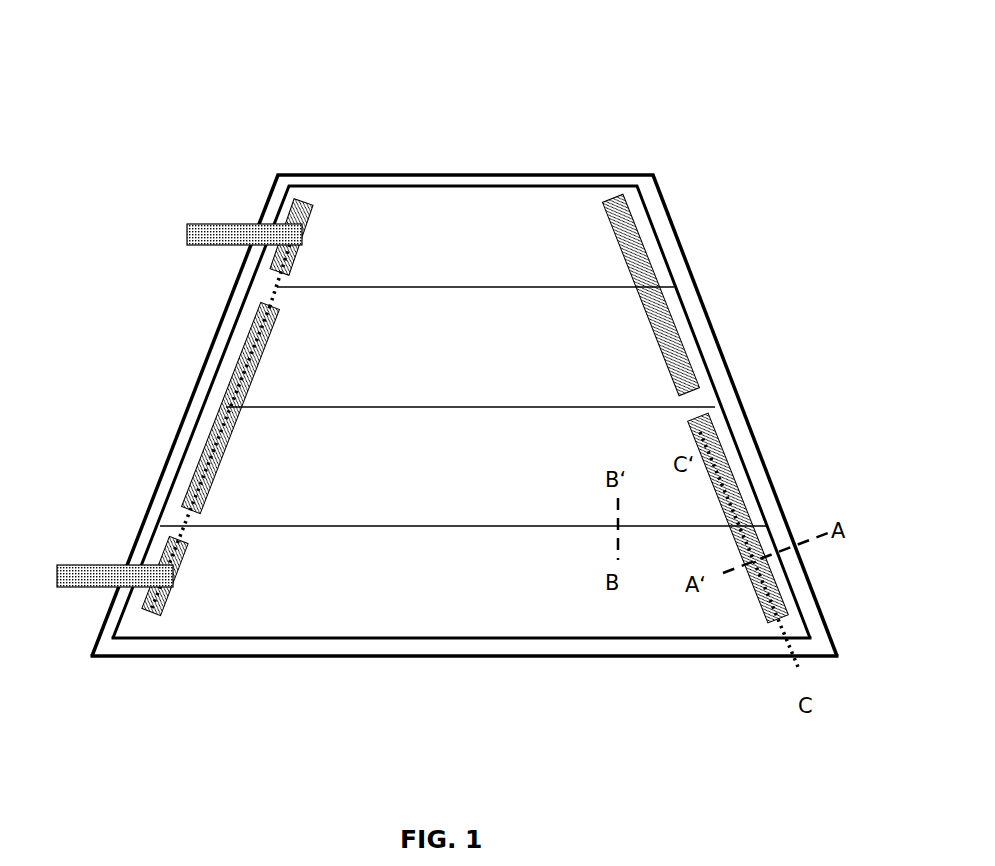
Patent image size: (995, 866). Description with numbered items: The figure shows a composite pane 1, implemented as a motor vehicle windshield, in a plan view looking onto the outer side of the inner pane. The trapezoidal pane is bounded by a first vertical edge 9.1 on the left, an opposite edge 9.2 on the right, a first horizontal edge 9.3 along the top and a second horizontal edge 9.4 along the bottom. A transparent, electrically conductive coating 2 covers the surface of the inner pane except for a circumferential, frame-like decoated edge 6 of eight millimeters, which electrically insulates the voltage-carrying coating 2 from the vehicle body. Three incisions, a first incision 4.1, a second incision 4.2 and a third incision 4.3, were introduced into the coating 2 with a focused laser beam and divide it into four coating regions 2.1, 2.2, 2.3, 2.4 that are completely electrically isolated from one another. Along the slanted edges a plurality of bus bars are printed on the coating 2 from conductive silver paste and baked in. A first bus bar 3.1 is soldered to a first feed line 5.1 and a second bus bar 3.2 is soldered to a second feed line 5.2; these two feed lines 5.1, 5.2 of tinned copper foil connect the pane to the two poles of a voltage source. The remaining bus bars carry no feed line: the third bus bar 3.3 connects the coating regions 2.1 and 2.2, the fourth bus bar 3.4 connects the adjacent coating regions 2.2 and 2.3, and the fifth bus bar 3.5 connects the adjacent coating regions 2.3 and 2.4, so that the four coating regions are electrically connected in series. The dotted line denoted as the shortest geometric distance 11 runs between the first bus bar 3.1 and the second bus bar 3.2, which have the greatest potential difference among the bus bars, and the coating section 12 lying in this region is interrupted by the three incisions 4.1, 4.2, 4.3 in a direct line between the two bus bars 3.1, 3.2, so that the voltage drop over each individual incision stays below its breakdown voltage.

The composite pane 1 is at (597, 165).
The coating 2 is at (366, 200).
The first coating region 2.1 is at (323, 593).
The second coating region 2.2 is at (390, 487).
The third coating region 2.3 is at (408, 318).
The fourth coating region 2.4 is at (473, 232).
The first bus bar with feed line 3.1 is at (167, 543).
The second bus bar with feed line 3.2 is at (287, 181).
The first bus bar without feed line 3.3 is at (705, 432).
The second bus bar without feed line 3.4 is at (240, 360).
The third bus bar without feed line 3.5 is at (650, 290).
The first incision 4.1 is at (258, 526).
The second incision 4.2 is at (335, 407).
The third incision 4.3 is at (558, 287).
The first feed line 5.1 is at (93, 572).
The second feed line 5.2 is at (208, 235).
The decoated edge 6 is at (630, 645).
The first vertical edge 9.1 is at (188, 372).
The right frame side 9.2 is at (722, 330).
The first horizontal edge 9.3 is at (545, 162).
The second horizontal edge 9.4 is at (472, 667).
The shortest geometric distance 11 is at (222, 427).
The coating section 12 is at (268, 278).